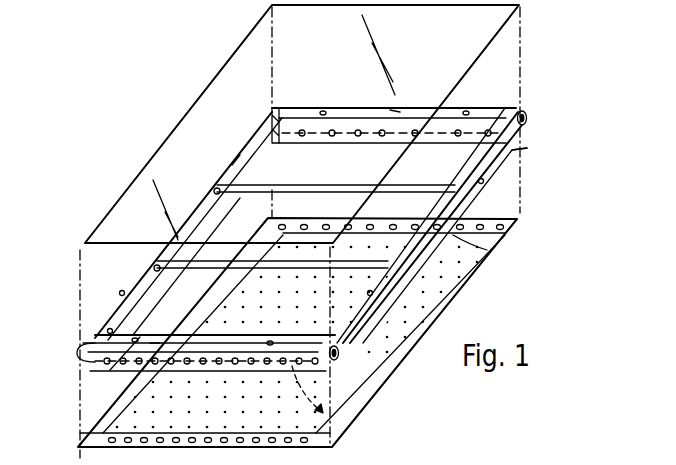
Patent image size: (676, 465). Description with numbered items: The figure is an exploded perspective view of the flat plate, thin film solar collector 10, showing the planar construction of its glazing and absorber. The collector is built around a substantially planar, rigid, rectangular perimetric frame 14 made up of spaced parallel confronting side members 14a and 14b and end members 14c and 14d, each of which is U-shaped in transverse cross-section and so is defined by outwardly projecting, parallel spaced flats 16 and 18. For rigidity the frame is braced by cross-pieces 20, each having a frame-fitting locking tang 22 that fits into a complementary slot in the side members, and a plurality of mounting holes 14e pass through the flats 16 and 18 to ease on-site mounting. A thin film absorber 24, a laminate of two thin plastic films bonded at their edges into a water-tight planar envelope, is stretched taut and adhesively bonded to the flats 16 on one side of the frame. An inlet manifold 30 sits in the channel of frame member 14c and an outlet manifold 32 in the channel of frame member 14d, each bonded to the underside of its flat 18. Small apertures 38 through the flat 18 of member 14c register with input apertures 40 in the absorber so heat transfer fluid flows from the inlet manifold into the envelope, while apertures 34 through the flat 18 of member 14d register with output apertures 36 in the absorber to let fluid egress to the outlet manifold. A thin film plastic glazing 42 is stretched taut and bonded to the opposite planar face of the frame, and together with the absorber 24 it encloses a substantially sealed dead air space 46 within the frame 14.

The flat plate thin film solar collector 10 is at (546, 57).
The perimetric frame 14 is at (306, 248).
The frame side member 14a is at (487, 250).
The frame side member 14b is at (232, 165).
The frame member 14c is at (390, 110).
The frame member 14d is at (150, 343).
The mounting holes 14e is at (485, 182).
The flats 16 is at (300, 110).
The flats 18 is at (526, 149).
The cross-pieces 20 is at (305, 185).
The locking tang 22 is at (214, 192).
The thin film absorber 24 is at (384, 388).
The inlet manifold 30 is at (526, 115).
The outlet manifold 32 is at (357, 348).
The apertures 34 is at (113, 375).
The output apertures 36 is at (308, 441).
The apertures 38 is at (336, 128).
The input apertures 40 is at (370, 222).
The thin film plastic glazing 42 is at (252, 42).
The dead air space 46 is at (346, 213).